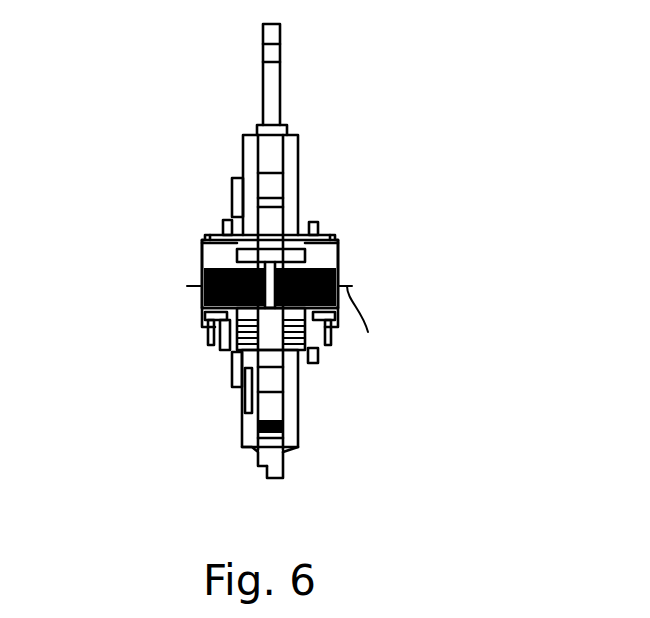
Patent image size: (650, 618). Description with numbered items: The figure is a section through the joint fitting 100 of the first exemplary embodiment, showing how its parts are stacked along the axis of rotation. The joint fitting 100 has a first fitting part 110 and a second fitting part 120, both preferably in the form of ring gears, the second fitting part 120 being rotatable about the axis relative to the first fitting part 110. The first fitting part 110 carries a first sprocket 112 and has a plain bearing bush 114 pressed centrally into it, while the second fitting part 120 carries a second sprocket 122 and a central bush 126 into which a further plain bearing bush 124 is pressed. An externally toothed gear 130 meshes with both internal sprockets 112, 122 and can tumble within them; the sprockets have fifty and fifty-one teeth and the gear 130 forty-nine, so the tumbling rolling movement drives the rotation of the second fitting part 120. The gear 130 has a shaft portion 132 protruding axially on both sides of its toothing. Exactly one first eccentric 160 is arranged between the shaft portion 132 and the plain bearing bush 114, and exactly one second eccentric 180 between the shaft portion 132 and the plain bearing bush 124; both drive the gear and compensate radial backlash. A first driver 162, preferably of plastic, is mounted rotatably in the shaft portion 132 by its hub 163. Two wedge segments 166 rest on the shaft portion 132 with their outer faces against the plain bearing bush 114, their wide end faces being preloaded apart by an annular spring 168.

The joint fitting 100 is at (172, 80).
The first fitting part 110 is at (243, 143).
The second fitting part 120 is at (298, 148).
The gear 130 is at (243, 165).
The bush 126 is at (320, 228).
The first driver 162 is at (205, 235).
The shaft portion 132 is at (310, 253).
The hub 163 is at (200, 293).
The wedge segments 166 is at (207, 335).
The spring 168 is at (207, 347).
The first eccentric 160 is at (216, 358).
The plain bearing bush 124 is at (318, 352).
The second eccentric 180 is at (324, 364).
The plain bearing bush 114 is at (240, 372).
The second sprocket 122 is at (297, 447).
The first sprocket 112 is at (260, 455).